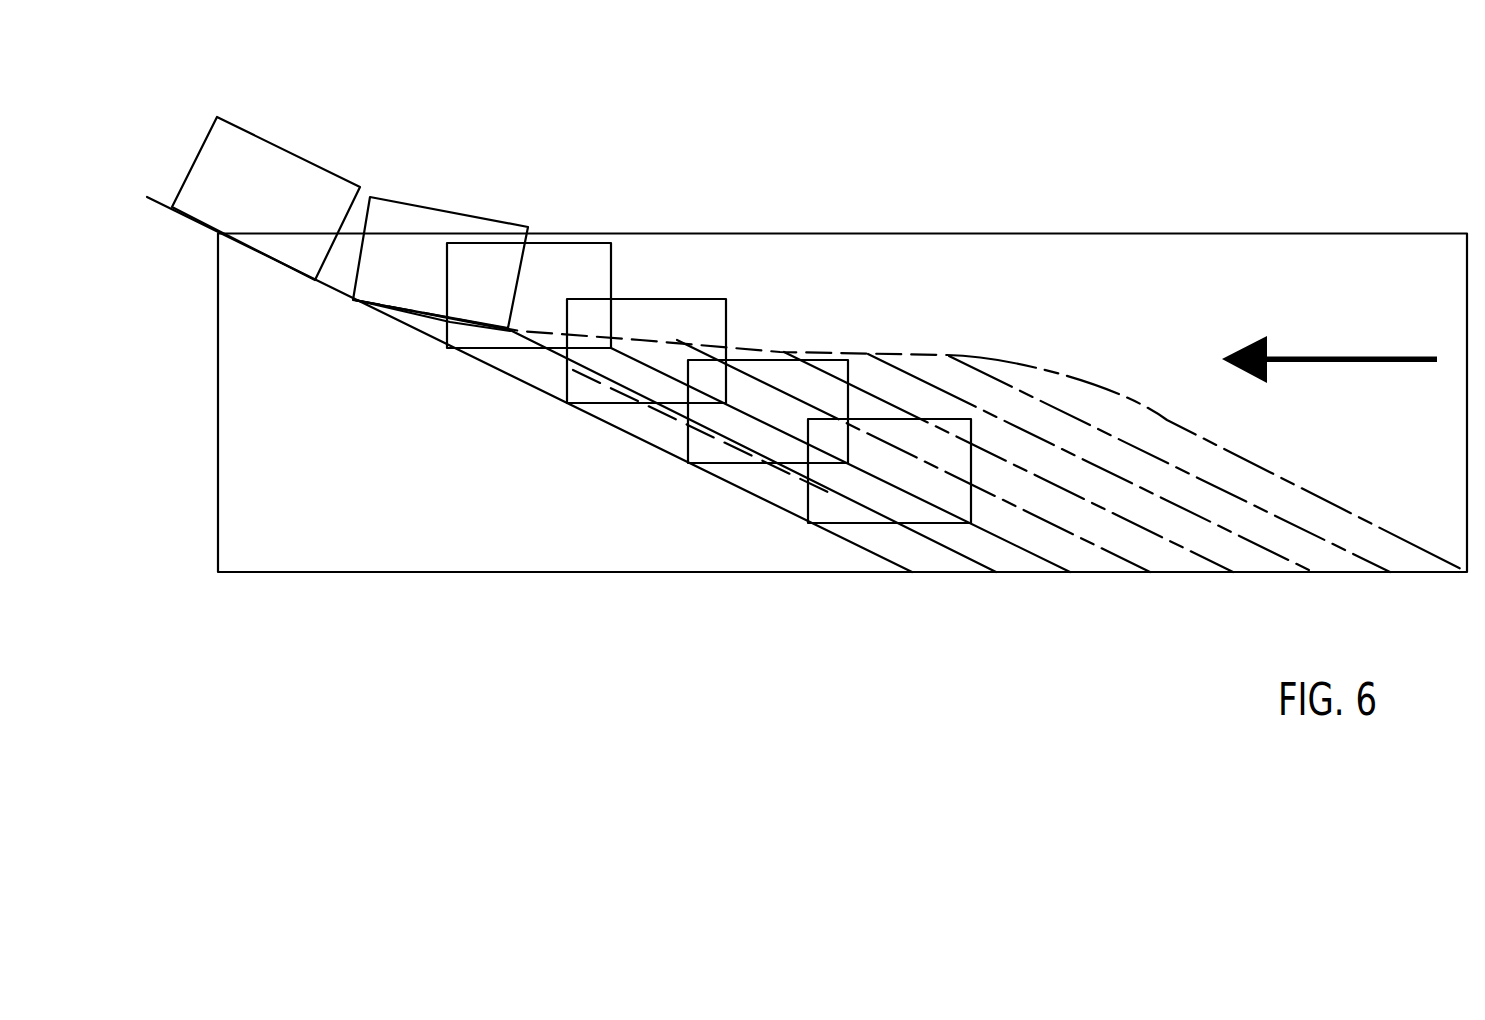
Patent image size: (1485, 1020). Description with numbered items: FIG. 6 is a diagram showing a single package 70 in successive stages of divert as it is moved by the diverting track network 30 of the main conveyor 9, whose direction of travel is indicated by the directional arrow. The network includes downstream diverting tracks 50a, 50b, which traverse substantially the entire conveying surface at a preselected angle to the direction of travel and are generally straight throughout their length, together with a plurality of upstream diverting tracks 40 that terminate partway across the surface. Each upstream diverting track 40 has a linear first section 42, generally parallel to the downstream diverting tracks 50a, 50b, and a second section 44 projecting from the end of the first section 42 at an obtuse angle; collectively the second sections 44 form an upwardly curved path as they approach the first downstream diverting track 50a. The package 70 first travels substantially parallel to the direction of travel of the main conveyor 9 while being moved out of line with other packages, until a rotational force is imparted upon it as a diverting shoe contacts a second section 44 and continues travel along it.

The main conveyor 9 is at (422, 573).
The diverting track network 30 is at (1112, 316).
The upstream diverting track 40 is at (1063, 528).
The first section 42 is at (1100, 463).
The second section 44 is at (821, 352).
The first downstream diverting track 50a is at (670, 417).
The second downstream diverting track 50b is at (510, 378).
The package 70 is at (286, 148).